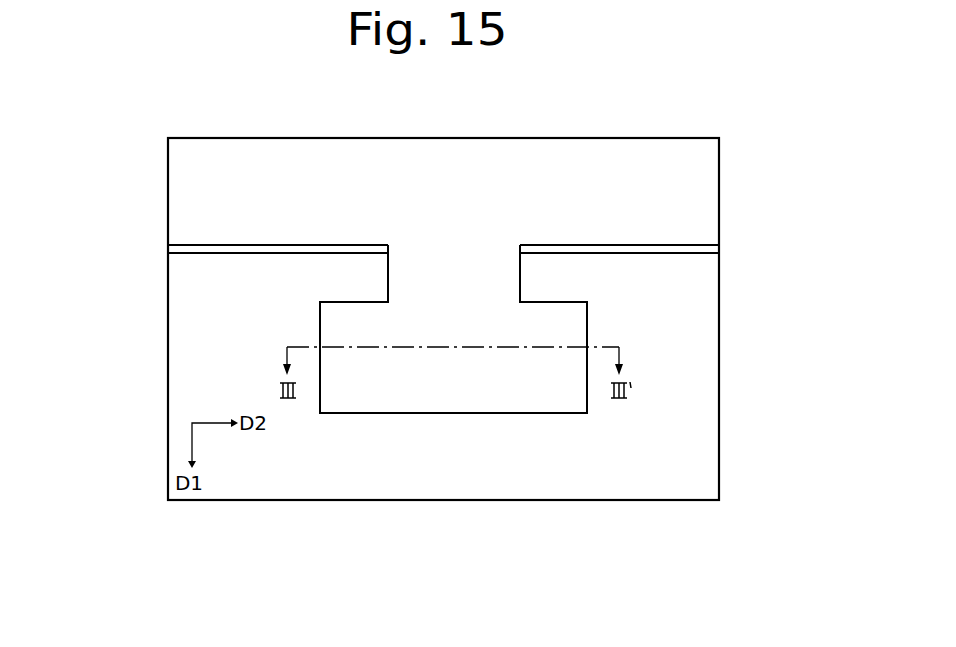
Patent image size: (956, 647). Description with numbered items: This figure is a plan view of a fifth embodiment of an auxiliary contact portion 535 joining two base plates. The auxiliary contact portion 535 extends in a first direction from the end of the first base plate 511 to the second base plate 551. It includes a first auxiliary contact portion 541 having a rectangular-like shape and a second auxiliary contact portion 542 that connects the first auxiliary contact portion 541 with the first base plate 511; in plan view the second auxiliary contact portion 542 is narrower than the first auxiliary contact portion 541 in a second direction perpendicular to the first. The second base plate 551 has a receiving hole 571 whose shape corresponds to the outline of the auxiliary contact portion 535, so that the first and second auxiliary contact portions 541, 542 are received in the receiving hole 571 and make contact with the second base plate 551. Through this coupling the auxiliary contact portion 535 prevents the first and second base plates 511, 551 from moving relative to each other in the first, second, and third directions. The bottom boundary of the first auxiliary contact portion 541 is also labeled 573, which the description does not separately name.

The first base plate 511 is at (185, 180).
The second base plate 551 is at (185, 297).
The second auxiliary contact portion 542 is at (485, 282).
The first auxiliary contact portion 541 is at (562, 323).
The auxiliary contact portion 535 is at (802, 272).
The receiving hole 571 is at (320, 325).
The bottom surface 573 is at (364, 413).